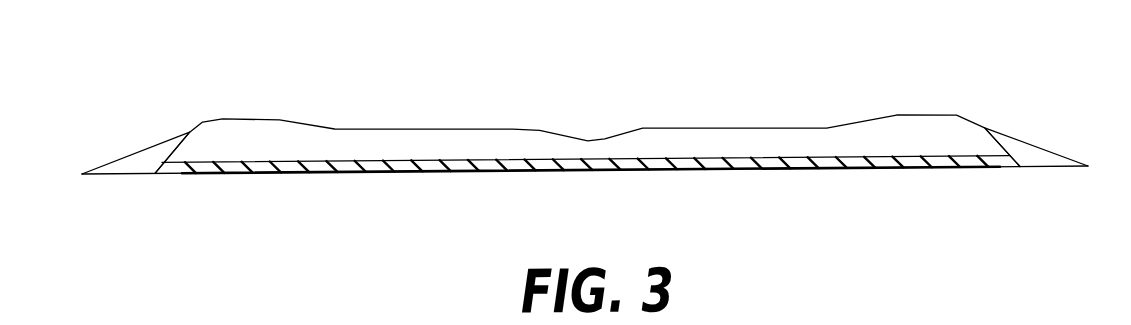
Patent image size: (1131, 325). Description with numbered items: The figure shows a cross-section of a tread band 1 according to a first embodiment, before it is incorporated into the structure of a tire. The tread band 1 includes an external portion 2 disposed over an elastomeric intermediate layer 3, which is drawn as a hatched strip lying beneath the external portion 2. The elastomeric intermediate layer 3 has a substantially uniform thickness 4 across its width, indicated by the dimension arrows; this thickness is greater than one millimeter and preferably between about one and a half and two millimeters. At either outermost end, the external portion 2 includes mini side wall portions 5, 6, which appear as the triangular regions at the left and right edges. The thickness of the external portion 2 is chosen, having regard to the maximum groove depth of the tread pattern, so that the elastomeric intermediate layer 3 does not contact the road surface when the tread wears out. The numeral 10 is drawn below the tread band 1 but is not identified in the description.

The tread band 1 is at (828, 90).
The external portion 2 is at (662, 142).
The elastomeric intermediate layer 3 is at (953, 165).
The substantially uniform thickness 4 is at (555, 114).
The mini side wall portion 5 is at (142, 160).
The mini side wall portion 6 is at (1030, 160).
The substrate 10 is at (814, 324).